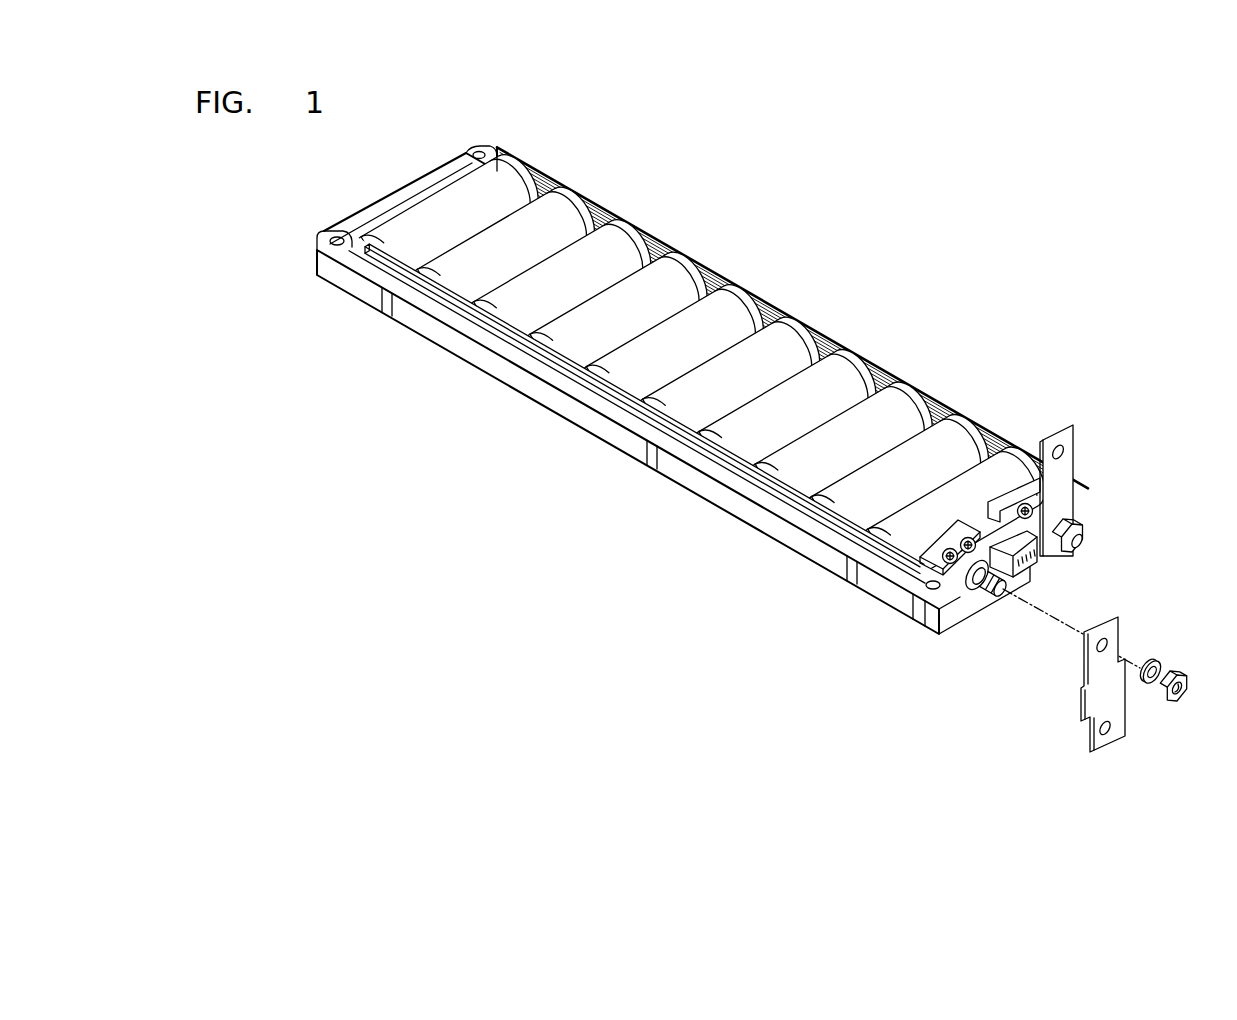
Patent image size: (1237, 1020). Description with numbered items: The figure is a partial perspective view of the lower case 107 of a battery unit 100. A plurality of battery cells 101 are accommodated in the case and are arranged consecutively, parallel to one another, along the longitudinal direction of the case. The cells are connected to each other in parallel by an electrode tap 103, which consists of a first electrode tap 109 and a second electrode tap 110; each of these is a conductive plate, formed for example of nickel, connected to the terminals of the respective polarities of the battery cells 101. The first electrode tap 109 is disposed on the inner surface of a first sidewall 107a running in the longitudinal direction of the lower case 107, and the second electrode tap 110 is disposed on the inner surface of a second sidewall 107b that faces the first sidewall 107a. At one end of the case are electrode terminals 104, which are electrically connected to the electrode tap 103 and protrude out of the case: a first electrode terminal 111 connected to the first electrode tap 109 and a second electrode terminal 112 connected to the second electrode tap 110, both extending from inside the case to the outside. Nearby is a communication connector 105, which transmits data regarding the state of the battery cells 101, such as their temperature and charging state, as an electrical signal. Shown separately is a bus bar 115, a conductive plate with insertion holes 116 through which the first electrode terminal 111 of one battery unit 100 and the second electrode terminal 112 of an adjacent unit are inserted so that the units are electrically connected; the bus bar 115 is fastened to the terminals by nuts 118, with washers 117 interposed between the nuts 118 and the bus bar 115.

The battery unit 100 is at (761, 455).
The battery cells 101 is at (487, 248).
The electrode tap 103 is at (916, 416).
The electrode terminals 104 is at (1083, 558).
The communication connector 105 is at (1043, 507).
The lower case 107 is at (673, 390).
The first sidewall 107a is at (553, 181).
The second sidewall 107b is at (408, 318).
The first electrode tap 109 is at (878, 372).
The second electrode tap 110 is at (792, 478).
The first electrode terminal 111 is at (1084, 544).
The second electrode terminal 112 is at (1004, 584).
The bus bar 115 is at (1096, 702).
The insertion holes 116 is at (1108, 645).
The washers 117 is at (1151, 690).
The nuts 118 is at (1170, 702).